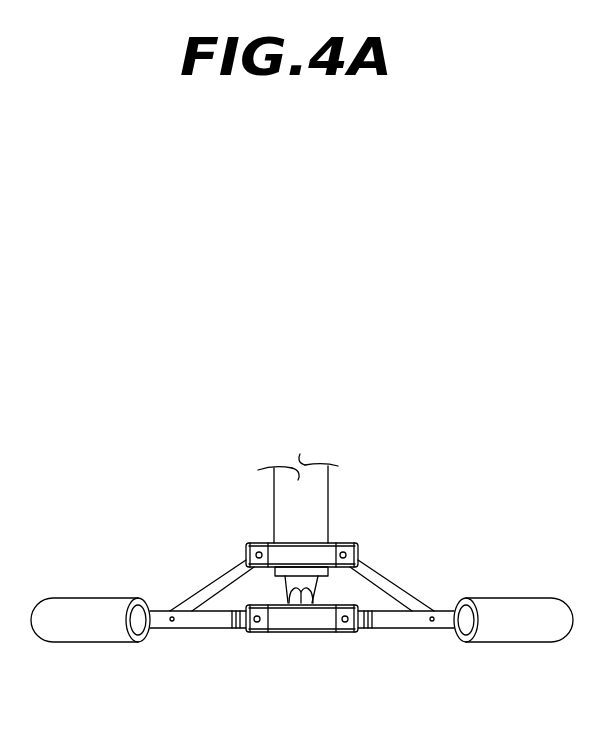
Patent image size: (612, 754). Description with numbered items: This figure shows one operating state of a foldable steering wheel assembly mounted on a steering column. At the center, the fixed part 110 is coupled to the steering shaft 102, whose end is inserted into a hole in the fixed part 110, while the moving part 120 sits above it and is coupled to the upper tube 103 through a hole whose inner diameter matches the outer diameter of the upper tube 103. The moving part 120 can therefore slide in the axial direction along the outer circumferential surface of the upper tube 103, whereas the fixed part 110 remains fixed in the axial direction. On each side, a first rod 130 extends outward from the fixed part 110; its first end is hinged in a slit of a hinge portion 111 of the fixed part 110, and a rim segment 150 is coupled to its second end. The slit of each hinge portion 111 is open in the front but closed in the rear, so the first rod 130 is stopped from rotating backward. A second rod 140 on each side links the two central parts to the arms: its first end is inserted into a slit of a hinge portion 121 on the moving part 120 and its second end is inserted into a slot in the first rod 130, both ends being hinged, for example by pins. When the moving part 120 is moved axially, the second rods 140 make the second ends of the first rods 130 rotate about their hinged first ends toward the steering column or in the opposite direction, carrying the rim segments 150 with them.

The steering shaft 102 is at (298, 600).
The upper tube 103 is at (300, 458).
The fixed part 110 is at (310, 620).
The hinge portion 111 is at (257, 632).
The moving part 120 is at (310, 553).
The hinge portion 121 is at (258, 546).
The first rod 130 is at (195, 629).
The second rod 140 is at (208, 590).
The rim segment 150 is at (84, 606).